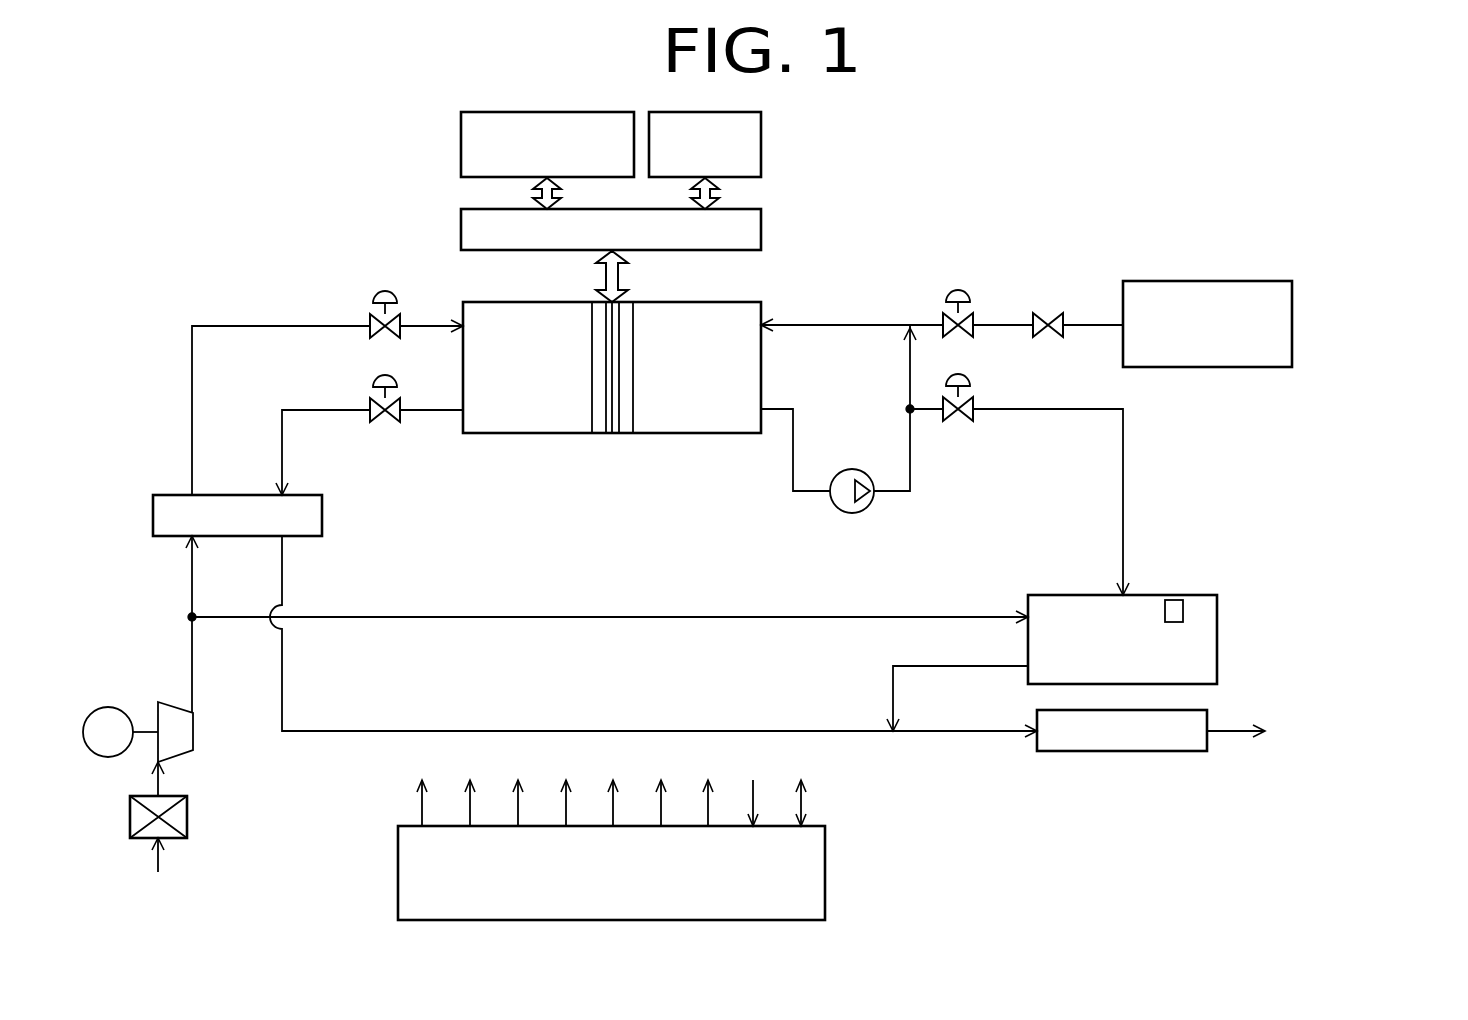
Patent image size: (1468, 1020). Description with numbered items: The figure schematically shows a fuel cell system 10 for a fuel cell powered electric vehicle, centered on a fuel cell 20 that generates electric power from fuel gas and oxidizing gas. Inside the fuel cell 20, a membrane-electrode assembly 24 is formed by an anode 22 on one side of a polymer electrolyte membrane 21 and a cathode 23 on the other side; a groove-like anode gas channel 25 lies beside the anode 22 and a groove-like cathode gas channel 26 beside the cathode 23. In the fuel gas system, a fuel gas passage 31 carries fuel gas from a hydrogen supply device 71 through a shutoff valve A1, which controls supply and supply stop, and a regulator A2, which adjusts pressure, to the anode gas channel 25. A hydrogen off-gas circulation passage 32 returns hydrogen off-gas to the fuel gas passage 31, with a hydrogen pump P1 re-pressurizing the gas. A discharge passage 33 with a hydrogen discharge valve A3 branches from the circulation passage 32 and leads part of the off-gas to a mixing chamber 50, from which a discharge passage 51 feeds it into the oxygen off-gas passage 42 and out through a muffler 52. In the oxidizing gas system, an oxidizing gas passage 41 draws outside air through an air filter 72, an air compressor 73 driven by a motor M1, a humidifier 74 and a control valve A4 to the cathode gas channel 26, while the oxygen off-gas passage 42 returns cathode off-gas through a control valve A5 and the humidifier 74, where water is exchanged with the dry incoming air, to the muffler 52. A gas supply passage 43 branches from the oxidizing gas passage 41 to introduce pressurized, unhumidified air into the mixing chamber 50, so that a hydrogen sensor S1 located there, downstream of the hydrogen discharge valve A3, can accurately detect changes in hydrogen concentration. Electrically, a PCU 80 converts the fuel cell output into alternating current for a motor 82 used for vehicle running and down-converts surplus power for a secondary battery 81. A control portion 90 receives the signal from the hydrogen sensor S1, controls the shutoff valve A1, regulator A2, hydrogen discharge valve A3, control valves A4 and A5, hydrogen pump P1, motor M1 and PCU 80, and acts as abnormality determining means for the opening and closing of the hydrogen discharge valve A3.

The fuel cell system 10 is at (975, 192).
The fuel cell 20 is at (695, 291).
The polymer electrolyte membrane 21 is at (611, 413).
The anode 22 is at (622, 420).
The cathode 23 is at (598, 420).
The membrane-electrode assembly 24 is at (663, 488).
The anode gas channel 25 is at (703, 413).
The cathode gas channel 26 is at (503, 413).
The fuel gas passage 31 is at (852, 325).
The hydrogen off-gas circulation passage 32 is at (910, 376).
The discharge passage 33 is at (1063, 409).
The oxidizing gas passage 41 is at (192, 573).
The oxygen off-gas passage 42 is at (282, 573).
The gas supply passage 43 is at (785, 617).
The mixing chamber 50 is at (1063, 595).
The discharge passage 51 is at (893, 698).
The muffler 52 is at (1122, 752).
The hydrogen supply device 71 is at (1207, 281).
The air filter 72 is at (187, 818).
The air compressor 73 is at (193, 732).
The humidifier 74 is at (322, 515).
The PCU 80 is at (761, 230).
The secondary battery 81 is at (461, 143).
The motor 82 is at (761, 143).
The control portion 90 is at (825, 873).
The shutoff valve A1 is at (1048, 309).
The regulator A2 is at (959, 299).
The hydrogen discharge valve A3 is at (959, 383).
The control valve A4 is at (327, 377).
The control valve A5 is at (369, 419).
The hydrogen pump P1 is at (852, 509).
The motor M1 is at (120, 732).
The hydrogen sensor S1 is at (1174, 600).